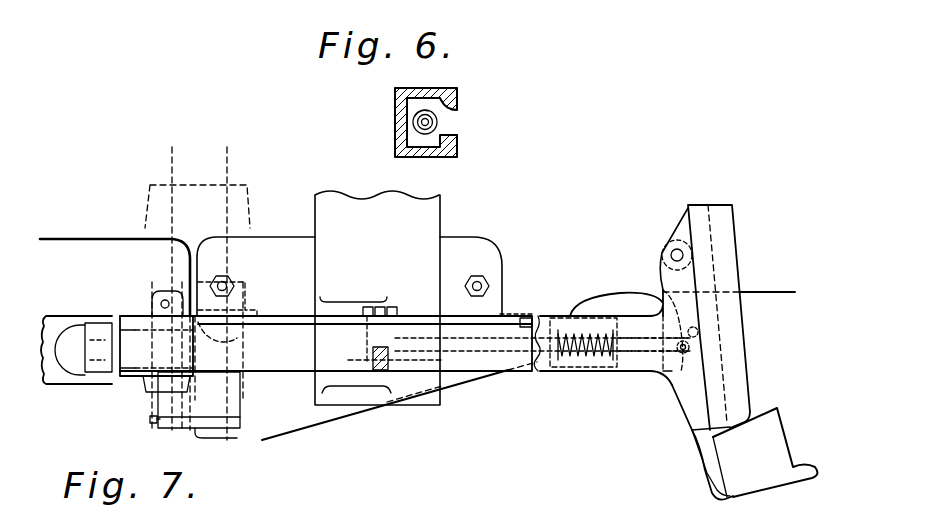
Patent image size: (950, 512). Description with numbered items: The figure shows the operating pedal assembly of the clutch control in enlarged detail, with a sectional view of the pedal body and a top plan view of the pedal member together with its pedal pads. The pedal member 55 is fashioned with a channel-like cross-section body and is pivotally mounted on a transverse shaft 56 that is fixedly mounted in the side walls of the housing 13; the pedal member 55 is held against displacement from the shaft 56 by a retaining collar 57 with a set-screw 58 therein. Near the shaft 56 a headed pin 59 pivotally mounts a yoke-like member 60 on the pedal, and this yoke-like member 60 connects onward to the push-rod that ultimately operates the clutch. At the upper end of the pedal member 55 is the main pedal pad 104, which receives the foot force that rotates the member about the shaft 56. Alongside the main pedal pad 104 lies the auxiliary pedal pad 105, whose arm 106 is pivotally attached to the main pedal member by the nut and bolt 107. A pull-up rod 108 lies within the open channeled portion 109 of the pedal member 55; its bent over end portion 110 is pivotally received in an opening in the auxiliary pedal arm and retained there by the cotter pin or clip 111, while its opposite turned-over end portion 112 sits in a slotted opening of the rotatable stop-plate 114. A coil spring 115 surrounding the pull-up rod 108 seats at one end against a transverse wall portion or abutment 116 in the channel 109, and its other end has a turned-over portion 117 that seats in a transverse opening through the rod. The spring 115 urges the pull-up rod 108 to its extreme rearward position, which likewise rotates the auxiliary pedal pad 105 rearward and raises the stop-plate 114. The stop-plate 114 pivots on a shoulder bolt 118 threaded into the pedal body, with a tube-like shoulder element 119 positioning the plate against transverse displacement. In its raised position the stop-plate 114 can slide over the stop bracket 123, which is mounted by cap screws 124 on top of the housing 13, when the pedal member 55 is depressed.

In FIG. 7, the housing 13 is at (275, 432).
In FIG. 6, the pedal member 55 is at (386, 156).
In FIG. 7, the pedal member 55 is at (557, 387).
In FIG. 7, the transverse shaft 56 is at (170, 172).
In FIG. 7, the retaining collar 57 is at (180, 425).
In FIG. 7, the set-screw 58 is at (150, 420).
In FIG. 7, the headed pin 59 is at (143, 393).
In FIG. 7, the yoke-like member 60 is at (100, 385).
In FIG. 7, the main pedal pad 104 is at (738, 370).
In FIG. 7, the auxiliary pedal pad 105 is at (742, 463).
In FIG. 7, the arm 106 is at (690, 397).
In FIG. 7, the nut and bolt 107 is at (672, 252).
In FIG. 6, the pull-up rod 108 is at (425, 122).
In FIG. 7, the pull-up rod 108 is at (652, 352).
In FIG. 6, the open channeled portion 109 is at (445, 104).
In FIG. 7, the bent over end portion 110 is at (663, 297).
In FIG. 7, the cotter pin or clip 111 is at (668, 375).
In FIG. 7, the turned-over end portion 112 is at (400, 335).
In FIG. 7, the stop-plate 114 is at (508, 317).
In FIG. 6, the coil spring 115 is at (445, 127).
In FIG. 6, the transverse wall portion or abutment 116 is at (423, 95).
In FIG. 7, the transverse wall portion or abutment 116 is at (537, 363).
In FIG. 7, the turned-over portion 117 is at (598, 368).
In FIG. 7, the shoulder bolt 118 is at (362, 308).
In FIG. 7, the tube-like shoulder element 119 is at (367, 335).
In FIG. 7, the stop bracket 123 is at (425, 222).
In FIG. 7, the cap screws 124 is at (228, 280).